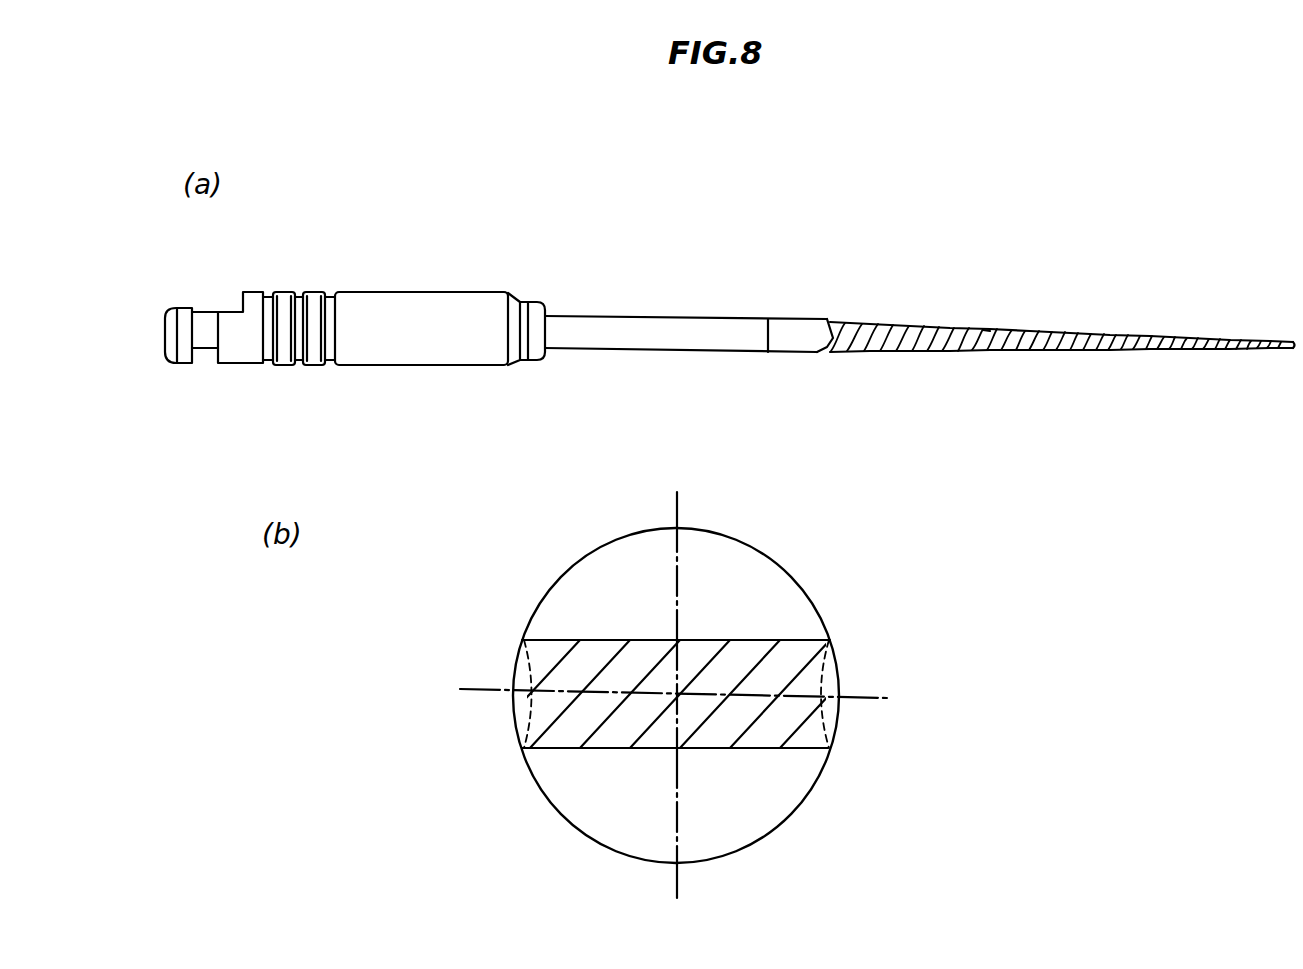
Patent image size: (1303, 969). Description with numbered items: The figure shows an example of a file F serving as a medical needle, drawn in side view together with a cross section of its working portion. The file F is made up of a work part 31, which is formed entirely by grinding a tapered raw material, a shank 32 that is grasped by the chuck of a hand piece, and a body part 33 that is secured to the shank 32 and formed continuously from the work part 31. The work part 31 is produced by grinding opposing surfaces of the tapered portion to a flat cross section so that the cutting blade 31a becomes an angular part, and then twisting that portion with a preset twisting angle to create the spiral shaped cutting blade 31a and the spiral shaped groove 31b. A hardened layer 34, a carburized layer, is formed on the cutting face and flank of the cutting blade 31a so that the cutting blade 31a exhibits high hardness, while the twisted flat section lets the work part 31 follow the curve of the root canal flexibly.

The file F is at (799, 268).
The work part 31 is at (1041, 316).
The cutting blade 31a is at (983, 330).
The spiral shaped groove 31b is at (997, 353).
The shank 32 is at (390, 292).
The body part 33 is at (627, 317).
The hardened layer 34 is at (521, 664).